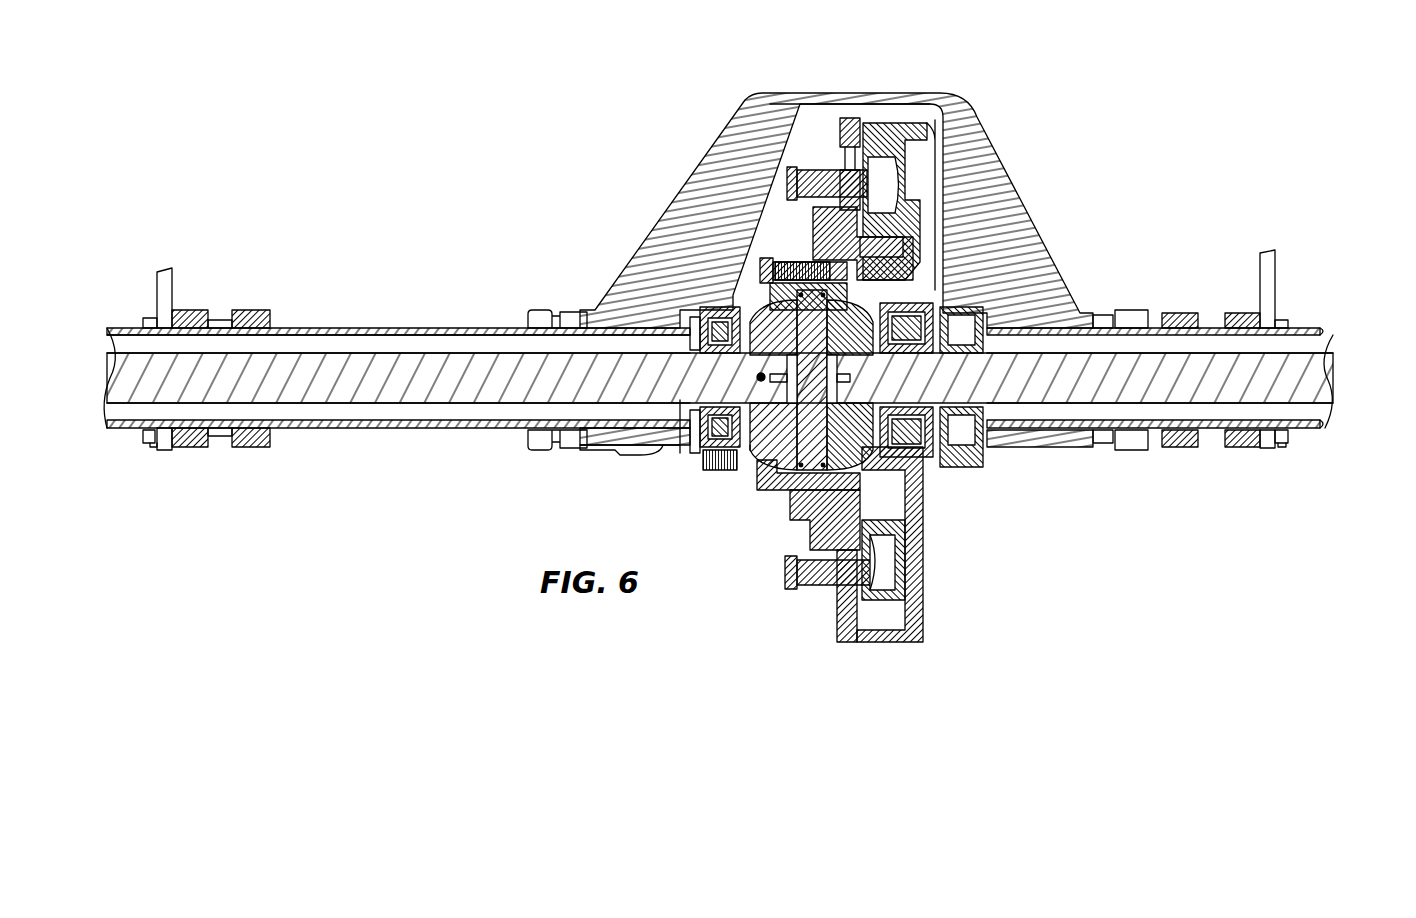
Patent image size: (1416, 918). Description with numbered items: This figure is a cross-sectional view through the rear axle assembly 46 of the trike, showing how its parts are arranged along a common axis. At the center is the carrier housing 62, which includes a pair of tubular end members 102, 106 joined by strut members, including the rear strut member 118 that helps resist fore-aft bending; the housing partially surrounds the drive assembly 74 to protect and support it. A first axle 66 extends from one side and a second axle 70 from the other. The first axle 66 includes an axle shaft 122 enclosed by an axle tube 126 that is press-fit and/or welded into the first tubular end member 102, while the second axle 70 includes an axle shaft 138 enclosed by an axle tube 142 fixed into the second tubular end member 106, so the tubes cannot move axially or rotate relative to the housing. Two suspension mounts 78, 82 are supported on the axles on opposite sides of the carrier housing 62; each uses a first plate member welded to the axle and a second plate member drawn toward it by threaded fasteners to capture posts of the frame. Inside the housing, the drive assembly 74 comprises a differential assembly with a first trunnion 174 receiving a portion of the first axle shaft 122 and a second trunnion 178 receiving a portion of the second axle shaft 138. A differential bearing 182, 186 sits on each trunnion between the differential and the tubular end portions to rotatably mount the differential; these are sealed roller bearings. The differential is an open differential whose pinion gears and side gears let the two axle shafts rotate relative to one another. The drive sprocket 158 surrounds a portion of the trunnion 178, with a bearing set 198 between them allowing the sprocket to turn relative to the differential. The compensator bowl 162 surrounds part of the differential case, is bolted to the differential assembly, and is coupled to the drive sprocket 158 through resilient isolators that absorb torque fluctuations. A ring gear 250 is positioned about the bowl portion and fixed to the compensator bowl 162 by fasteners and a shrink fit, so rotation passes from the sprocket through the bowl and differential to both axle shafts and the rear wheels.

The rear axle assembly 46 is at (871, 372).
The carrier housing 62 is at (836, 246).
The first axle 66 is at (1171, 336).
The second axle 70 is at (398, 415).
The drive assembly 74 is at (861, 577).
The suspension mount 78 is at (1158, 371).
The suspension mount 82 is at (195, 383).
The first tubular end member 102 is at (1067, 445).
The second tubular end member 106 is at (538, 310).
The rear strut member 118 is at (780, 101).
The axle shaft 122 is at (1310, 372).
The axle tube 126 is at (1302, 330).
The axle shaft 138 is at (752, 347).
The axle tube 142 is at (310, 428).
The drive sprocket 158 is at (913, 615).
The compensator bowl 162 is at (810, 222).
The first trunnion 174 is at (977, 313).
The second trunnion 178 is at (692, 413).
The differential bearing 182 is at (967, 472).
The differential bearing 186 is at (723, 310).
The bearing set 198 is at (920, 263).
The ring gear 250 is at (845, 117).